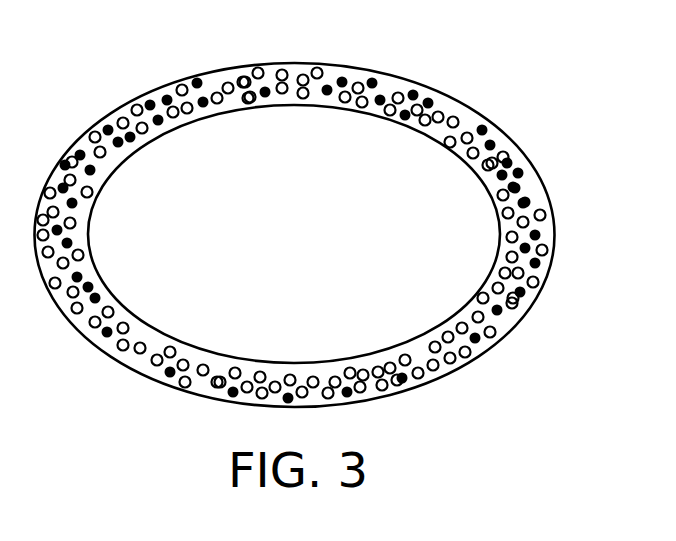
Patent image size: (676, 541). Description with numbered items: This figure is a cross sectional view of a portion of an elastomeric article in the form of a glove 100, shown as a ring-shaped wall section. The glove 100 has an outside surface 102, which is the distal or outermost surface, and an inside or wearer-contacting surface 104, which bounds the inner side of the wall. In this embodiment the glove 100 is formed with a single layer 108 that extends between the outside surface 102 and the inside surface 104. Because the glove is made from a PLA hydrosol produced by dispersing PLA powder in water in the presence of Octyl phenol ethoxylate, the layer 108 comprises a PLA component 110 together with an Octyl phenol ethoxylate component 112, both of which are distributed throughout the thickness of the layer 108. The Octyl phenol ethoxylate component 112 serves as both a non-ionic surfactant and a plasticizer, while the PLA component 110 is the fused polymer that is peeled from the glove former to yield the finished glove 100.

The glove 100 is at (470, 67).
The outside surface 102 is at (544, 183).
The inside surface 104 is at (368, 359).
The single layer 108 is at (390, 87).
The PLA component 110 is at (231, 107).
The Octyl phenol ethoxylate component 112 is at (390, 112).